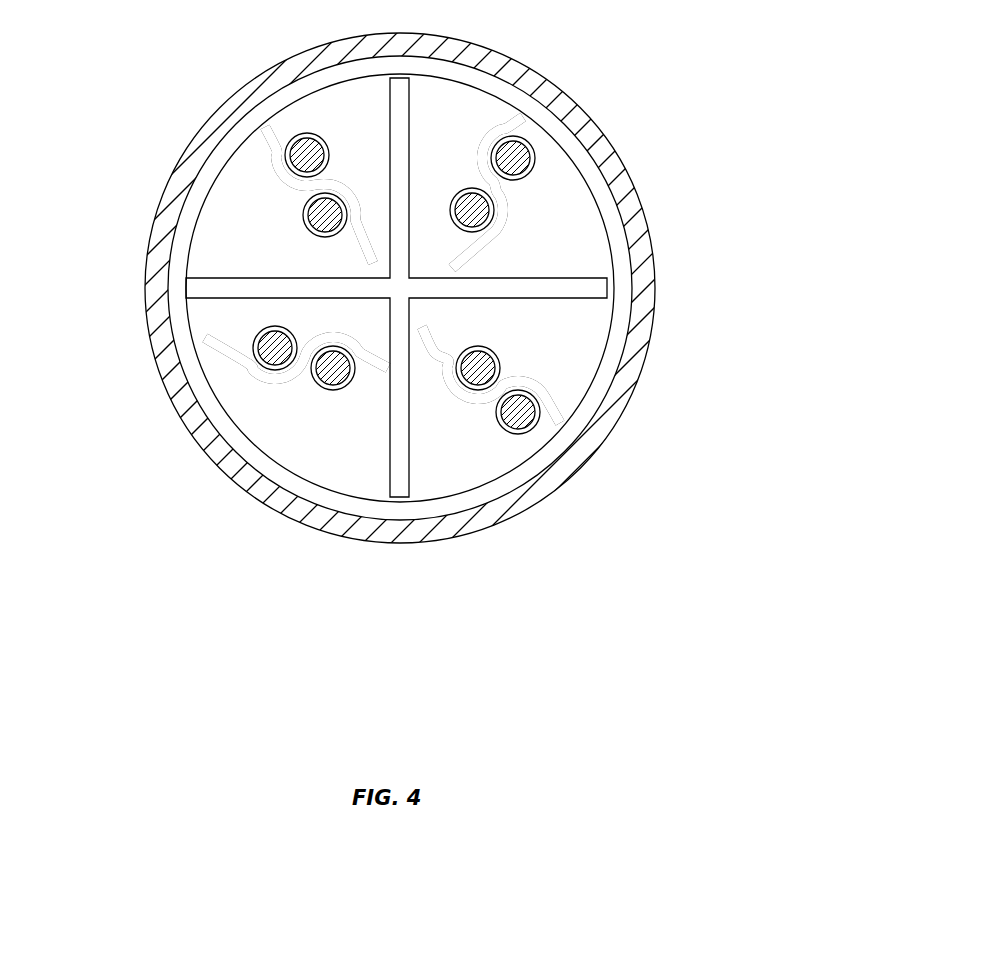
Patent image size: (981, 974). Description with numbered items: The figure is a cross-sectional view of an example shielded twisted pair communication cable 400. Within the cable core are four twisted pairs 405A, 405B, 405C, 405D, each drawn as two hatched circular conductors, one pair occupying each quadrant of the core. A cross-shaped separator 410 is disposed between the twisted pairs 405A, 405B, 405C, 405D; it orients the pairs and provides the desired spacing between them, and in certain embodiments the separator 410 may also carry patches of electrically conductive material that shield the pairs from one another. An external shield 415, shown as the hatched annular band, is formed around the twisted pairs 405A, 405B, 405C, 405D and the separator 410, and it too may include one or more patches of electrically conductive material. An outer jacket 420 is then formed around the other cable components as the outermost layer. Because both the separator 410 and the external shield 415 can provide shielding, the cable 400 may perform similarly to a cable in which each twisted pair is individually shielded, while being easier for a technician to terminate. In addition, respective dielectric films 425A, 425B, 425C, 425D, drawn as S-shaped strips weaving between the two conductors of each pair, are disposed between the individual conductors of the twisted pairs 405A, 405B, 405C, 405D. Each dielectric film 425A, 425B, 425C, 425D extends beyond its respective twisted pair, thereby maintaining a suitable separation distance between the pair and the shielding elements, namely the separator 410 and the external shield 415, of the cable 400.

The shielded twisted pair communication cable 400 is at (258, 557).
The twisted pair 405A is at (468, 107).
The twisted pair 405B is at (527, 362).
The twisted pair 405C is at (237, 398).
The twisted pair 405D is at (338, 117).
The separator 410 is at (413, 463).
The external shield 415 is at (592, 120).
The outer jacket 420 is at (780, 190).
The dielectric film 425A is at (488, 248).
The dielectric film 425B is at (547, 418).
The dielectric film 425C is at (282, 385).
The dielectric film 425D is at (262, 172).